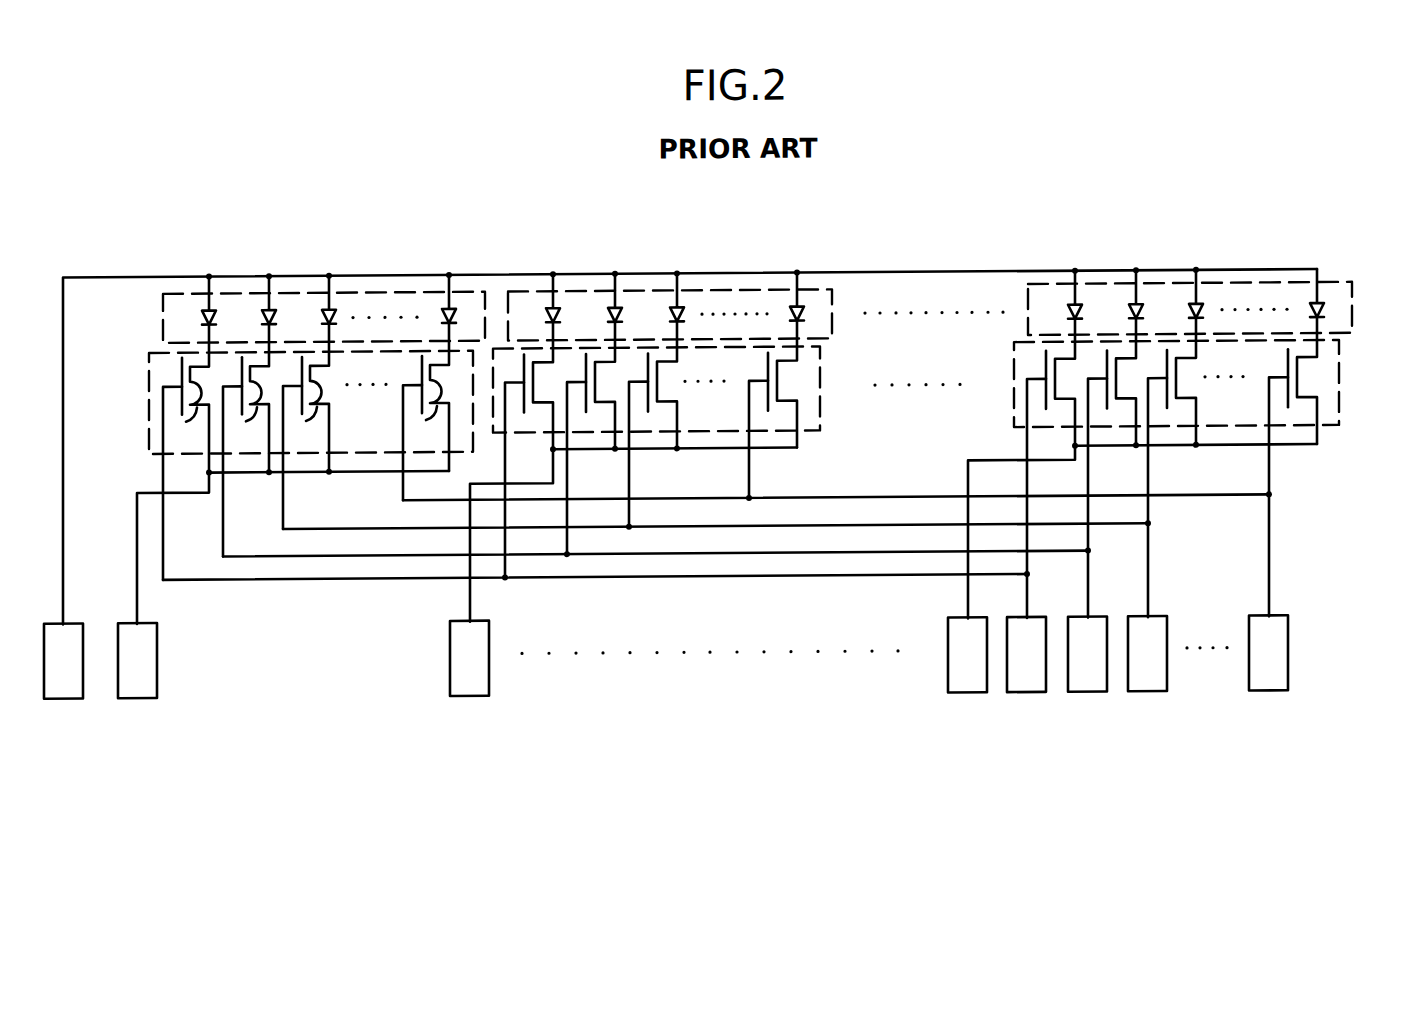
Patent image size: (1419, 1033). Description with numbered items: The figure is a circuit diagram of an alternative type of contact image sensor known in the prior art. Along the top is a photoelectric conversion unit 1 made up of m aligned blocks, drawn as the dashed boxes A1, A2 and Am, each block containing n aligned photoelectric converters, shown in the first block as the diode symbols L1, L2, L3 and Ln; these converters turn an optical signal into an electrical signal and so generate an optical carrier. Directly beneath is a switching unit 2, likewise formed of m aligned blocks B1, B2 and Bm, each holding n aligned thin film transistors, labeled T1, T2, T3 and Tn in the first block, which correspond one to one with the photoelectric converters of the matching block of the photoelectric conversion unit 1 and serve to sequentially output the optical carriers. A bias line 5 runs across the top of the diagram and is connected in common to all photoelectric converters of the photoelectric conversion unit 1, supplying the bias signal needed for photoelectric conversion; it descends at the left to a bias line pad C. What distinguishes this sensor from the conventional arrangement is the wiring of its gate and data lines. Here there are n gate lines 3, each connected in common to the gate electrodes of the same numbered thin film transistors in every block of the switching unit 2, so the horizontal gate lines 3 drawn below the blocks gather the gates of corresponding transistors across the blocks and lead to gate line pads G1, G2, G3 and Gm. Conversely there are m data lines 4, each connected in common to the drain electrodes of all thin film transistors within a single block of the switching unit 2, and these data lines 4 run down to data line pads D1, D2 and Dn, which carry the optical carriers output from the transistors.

The photoelectric conversion unit 1 is at (761, 274).
The switching unit 2 is at (755, 470).
The gate lines 3 is at (1028, 589).
The data lines 4 is at (470, 596).
The bias line 5 is at (63, 538).
The first light emitting element block A1 is at (294, 309).
The second light emitting element block A2 is at (701, 288).
The m-th light emitting element block Am is at (1272, 292).
The first transistor block B1 is at (282, 452).
The second transistor block B2 is at (820, 394).
The m-th transistor block Bm is at (1340, 407).
The light emitting diode 1 L1 is at (192, 303).
The light emitting diode 2 L2 is at (252, 302).
The light emitting diode 3 L3 is at (312, 302).
The light emitting diode n Ln is at (430, 299).
The transistor 1 T1 is at (186, 452).
The transistor 2 T2 is at (246, 440).
The transistor 3 T3 is at (306, 426).
The transistor n Tn is at (426, 411).
The bias line pad C is at (63, 660).
The data line pad D1 is at (137, 660).
The data line pad D2 is at (469, 658).
The data line pad Dn is at (967, 654).
The gate line pad G1 is at (1026, 654).
The gate line pad G2 is at (1087, 653).
The gate line pad G3 is at (1147, 653).
The gate line pad Gm is at (1268, 652).